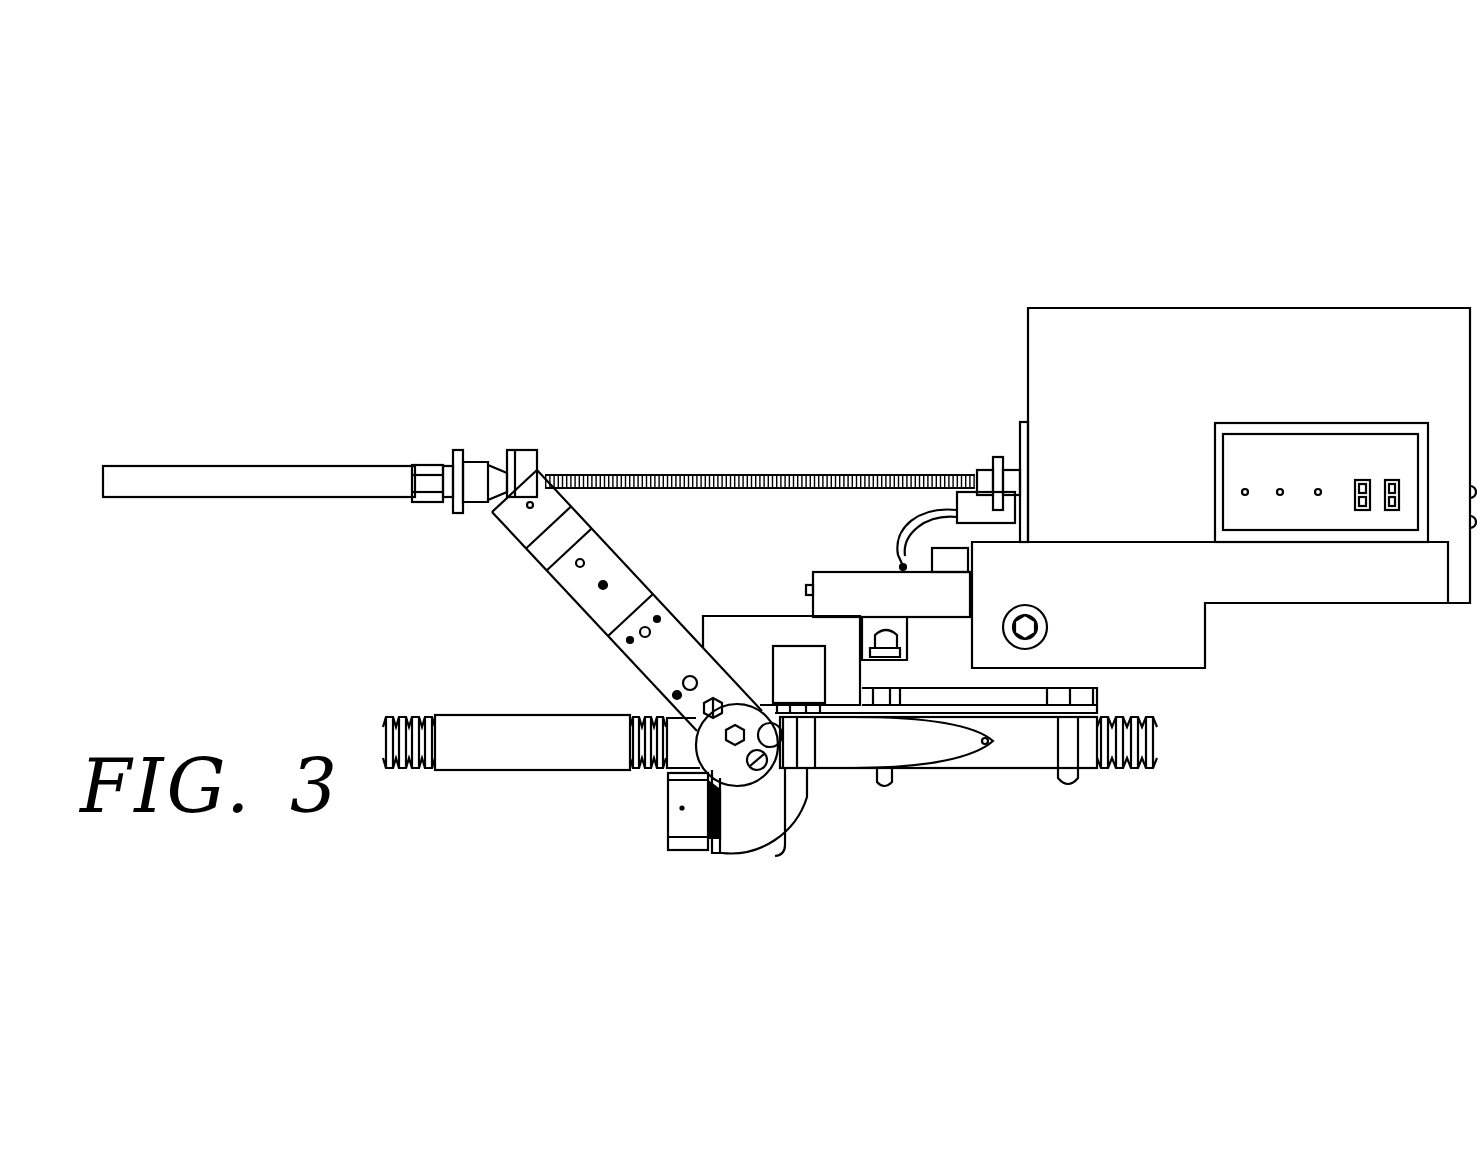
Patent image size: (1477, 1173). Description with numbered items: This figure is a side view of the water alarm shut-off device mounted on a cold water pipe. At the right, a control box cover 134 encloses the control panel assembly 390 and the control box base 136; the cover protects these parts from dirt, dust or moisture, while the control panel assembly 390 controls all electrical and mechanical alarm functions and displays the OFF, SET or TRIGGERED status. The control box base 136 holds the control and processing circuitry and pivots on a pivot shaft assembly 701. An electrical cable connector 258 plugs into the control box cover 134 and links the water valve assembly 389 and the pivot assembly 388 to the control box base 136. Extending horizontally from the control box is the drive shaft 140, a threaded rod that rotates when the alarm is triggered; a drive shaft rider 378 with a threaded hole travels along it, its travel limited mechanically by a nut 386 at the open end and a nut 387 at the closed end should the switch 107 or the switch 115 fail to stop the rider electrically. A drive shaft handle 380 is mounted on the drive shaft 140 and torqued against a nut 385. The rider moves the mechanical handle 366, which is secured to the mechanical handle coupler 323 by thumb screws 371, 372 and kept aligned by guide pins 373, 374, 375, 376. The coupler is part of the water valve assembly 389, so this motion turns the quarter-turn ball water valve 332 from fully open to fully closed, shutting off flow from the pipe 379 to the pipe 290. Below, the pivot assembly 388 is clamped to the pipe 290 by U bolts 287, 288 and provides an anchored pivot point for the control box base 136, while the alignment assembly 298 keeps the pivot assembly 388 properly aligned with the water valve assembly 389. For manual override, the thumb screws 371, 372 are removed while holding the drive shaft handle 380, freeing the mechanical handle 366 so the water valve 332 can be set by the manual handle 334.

The drive shaft handle 380 is at (232, 478).
The nut 385 is at (423, 470).
The nut 386 is at (458, 465).
The drive shaft rider 378 is at (525, 462).
The drive shaft 140 is at (732, 478).
The nut 387 is at (985, 470).
The electrical cable connector 258 is at (1012, 510).
The control box cover 134 is at (1288, 312).
The control panel assembly 390 is at (1240, 447).
The control box base 136 is at (1200, 620).
The pivot shaft assembly 701 is at (1050, 634).
The alignment assembly 298 is at (850, 574).
The water valve assembly 389 is at (805, 616).
The guide pin 376 is at (706, 670).
The pivot assembly 388 is at (1102, 680).
The mechanical handle coupler 323 is at (632, 658).
The mechanical handle 366 is at (540, 556).
The guide pin 375 is at (652, 602).
The thumb screw 371 is at (655, 619).
The guide pin 373 is at (628, 640).
The thumb screw 372 is at (683, 683).
The guide pin 374 is at (676, 696).
The pipe 379 is at (468, 753).
The water valve 332 is at (687, 768).
The switch 115 is at (722, 860).
The switch 107 is at (795, 845).
The U bolt 288 is at (885, 790).
The manual handle 334 is at (827, 757).
The U bolt 287 is at (1070, 782).
The pipe 290 is at (1150, 772).